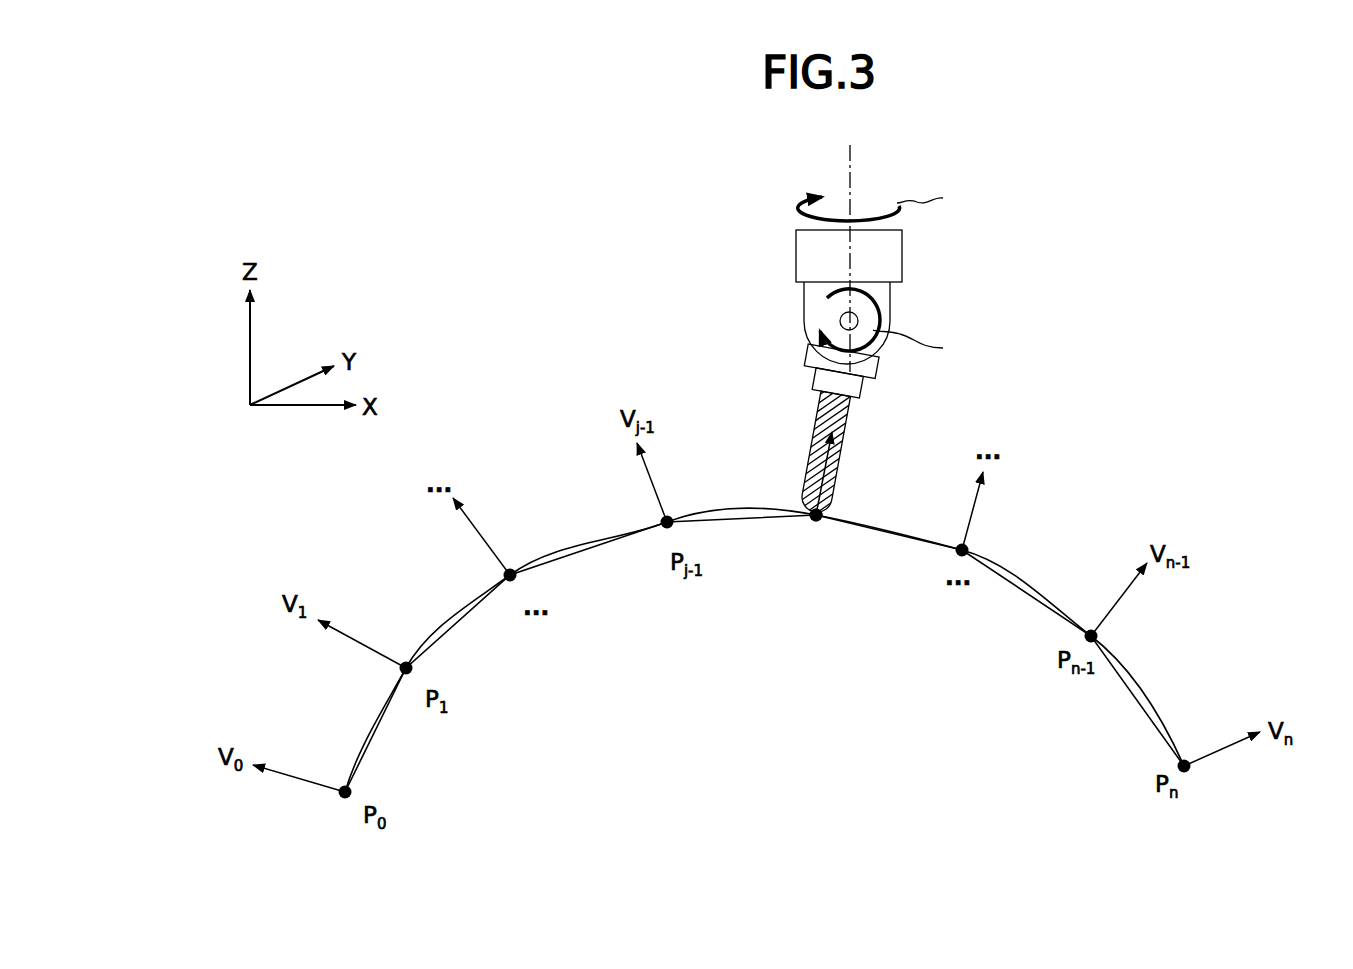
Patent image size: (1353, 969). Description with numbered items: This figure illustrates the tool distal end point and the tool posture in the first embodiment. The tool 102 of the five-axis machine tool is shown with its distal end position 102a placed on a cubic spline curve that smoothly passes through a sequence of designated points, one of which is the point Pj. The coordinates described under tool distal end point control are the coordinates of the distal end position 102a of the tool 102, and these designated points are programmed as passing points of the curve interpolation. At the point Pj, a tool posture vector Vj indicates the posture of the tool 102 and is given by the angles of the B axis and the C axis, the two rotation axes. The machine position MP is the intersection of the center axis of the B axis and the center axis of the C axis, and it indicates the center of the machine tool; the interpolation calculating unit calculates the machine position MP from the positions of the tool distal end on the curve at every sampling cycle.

The tool 102 is at (788, 408).
The distal end position 102a is at (813, 518).
The machine position MP is at (858, 315).
The tool posture vector Vj is at (856, 470).
The designated point Pj is at (817, 540).